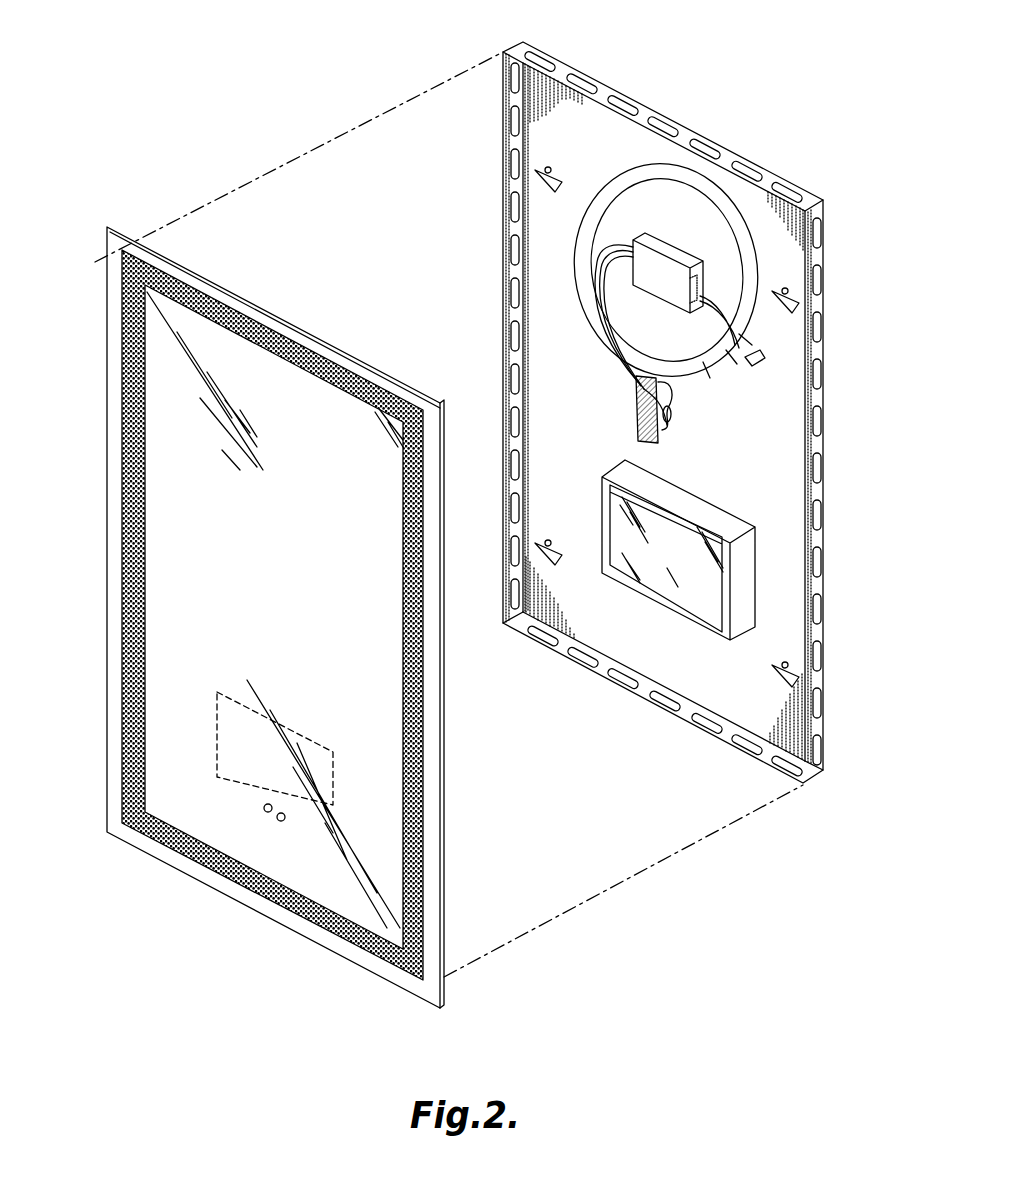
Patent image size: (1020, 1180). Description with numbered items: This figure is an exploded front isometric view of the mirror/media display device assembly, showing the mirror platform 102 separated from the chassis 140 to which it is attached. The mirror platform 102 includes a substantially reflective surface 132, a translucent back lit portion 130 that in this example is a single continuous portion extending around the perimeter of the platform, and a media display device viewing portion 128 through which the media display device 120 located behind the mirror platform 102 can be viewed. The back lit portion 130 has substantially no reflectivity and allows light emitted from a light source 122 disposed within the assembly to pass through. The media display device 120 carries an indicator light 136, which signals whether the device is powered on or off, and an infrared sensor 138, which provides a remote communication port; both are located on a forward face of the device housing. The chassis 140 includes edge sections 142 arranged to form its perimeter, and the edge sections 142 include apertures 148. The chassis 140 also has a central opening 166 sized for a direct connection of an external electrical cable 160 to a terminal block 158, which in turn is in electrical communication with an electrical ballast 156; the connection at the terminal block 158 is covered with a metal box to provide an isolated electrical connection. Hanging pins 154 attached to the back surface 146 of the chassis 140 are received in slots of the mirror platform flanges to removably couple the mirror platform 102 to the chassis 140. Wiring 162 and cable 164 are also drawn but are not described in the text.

The mirror platform 102 is at (345, 957).
The media display device 120 is at (618, 518).
The light source 122 is at (584, 216).
The media display device viewing portion 128 is at (217, 742).
The back lit portion 130 is at (128, 309).
The reflective surface 132 is at (153, 385).
The indicator light 136 is at (281, 821).
The infrared sensor 138 is at (268, 812).
The chassis 140 is at (590, 678).
The edge section 142 is at (814, 200).
The back surface 146 is at (650, 655).
The aperture 148 is at (634, 102).
The hanging pin 154 is at (540, 177).
The electrical ballast 156 is at (647, 273).
The terminal block 158 is at (636, 440).
The external electrical cable 160 is at (668, 383).
The wires 162 is at (596, 347).
The cable 164 is at (700, 292).
The central opening 166 is at (668, 428).